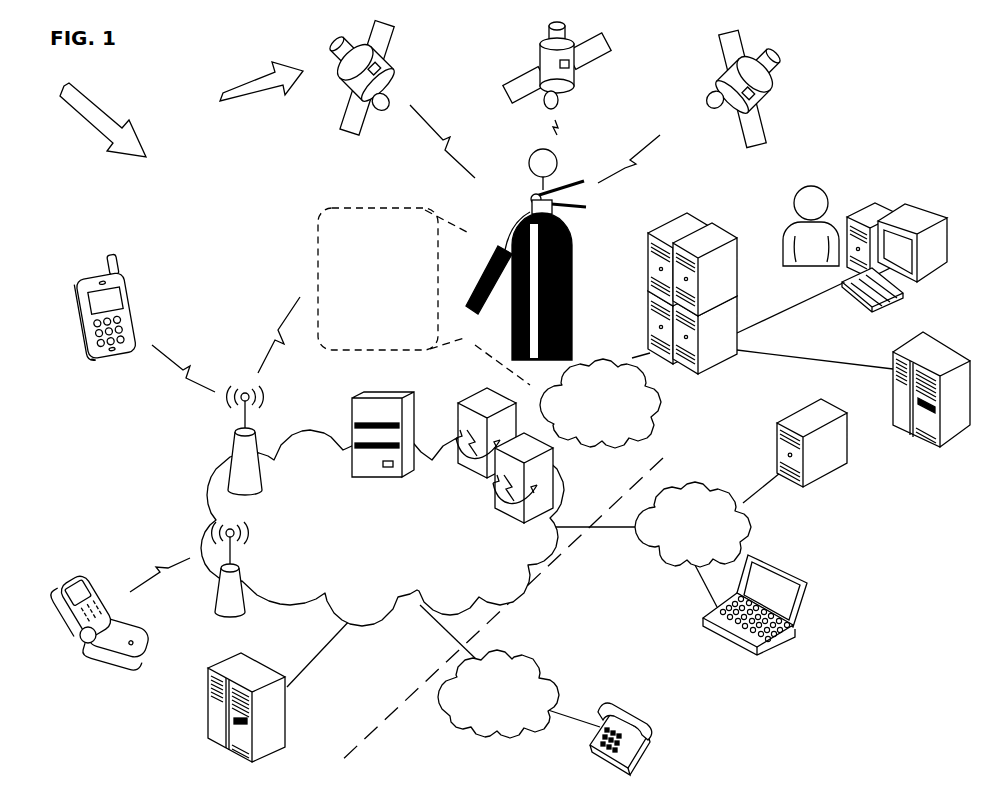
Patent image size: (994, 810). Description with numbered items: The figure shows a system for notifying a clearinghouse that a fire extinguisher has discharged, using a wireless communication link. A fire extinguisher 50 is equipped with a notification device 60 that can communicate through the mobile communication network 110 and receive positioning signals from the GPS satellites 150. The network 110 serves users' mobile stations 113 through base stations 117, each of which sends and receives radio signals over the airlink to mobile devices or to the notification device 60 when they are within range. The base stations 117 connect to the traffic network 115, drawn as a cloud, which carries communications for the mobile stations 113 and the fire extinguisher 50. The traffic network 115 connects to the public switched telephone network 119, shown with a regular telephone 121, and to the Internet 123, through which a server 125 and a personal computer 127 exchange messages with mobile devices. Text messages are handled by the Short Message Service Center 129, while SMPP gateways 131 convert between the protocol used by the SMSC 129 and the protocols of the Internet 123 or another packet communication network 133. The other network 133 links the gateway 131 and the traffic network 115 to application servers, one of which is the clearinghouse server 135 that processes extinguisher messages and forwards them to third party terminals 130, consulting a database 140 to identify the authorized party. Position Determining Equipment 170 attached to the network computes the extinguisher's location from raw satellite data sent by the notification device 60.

The mobile communication network 110 is at (87, 120).
The GPS satellites 150 is at (244, 84).
The mobile stations 113 is at (80, 273).
The traffic network 115 is at (305, 438).
The base stations 117 is at (234, 450).
The public switched telephone network 119 is at (558, 686).
The telephone 121 is at (598, 757).
The Internet 123 is at (641, 565).
The server 125 is at (777, 460).
The personal computer 127 is at (727, 645).
The Short Message Service Center 129 is at (352, 409).
The third party terminals 130 is at (915, 206).
The SMPP protocol gateways 131 is at (458, 402).
The other packet communication network 133 is at (660, 418).
The application server 135 is at (733, 235).
The database 140 is at (931, 401).
The Position Determining Equipment 170 is at (288, 700).
The notification device 60 is at (318, 240).
The fire extinguisher 50 is at (572, 232).